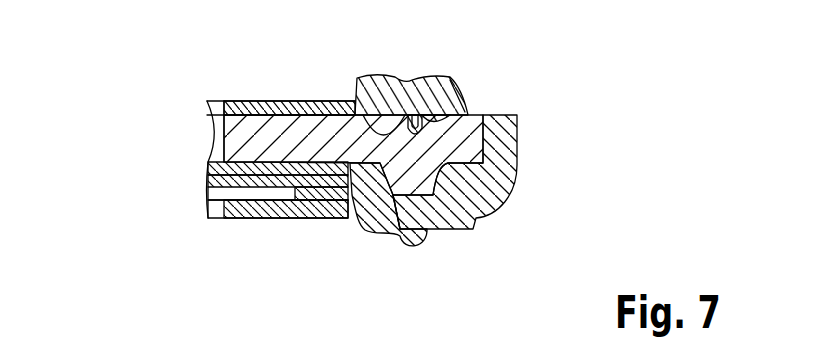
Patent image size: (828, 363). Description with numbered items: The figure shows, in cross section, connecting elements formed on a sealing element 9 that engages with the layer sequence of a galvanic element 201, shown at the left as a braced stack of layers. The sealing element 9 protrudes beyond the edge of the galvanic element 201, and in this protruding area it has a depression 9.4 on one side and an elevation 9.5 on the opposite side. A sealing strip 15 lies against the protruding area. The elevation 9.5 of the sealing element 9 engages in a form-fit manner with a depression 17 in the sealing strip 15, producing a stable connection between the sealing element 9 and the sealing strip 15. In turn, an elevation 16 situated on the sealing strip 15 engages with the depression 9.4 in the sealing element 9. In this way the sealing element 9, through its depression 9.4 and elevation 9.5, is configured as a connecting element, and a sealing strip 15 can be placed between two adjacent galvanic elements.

The galvanic element 201 is at (188, 96).
The sealing element 9 is at (270, 133).
The depression 9.4 is at (355, 112).
The elevation 9.5 is at (358, 219).
The elevation 16 is at (406, 83).
The sealing strip 15 is at (462, 83).
The depression 17 is at (383, 226).